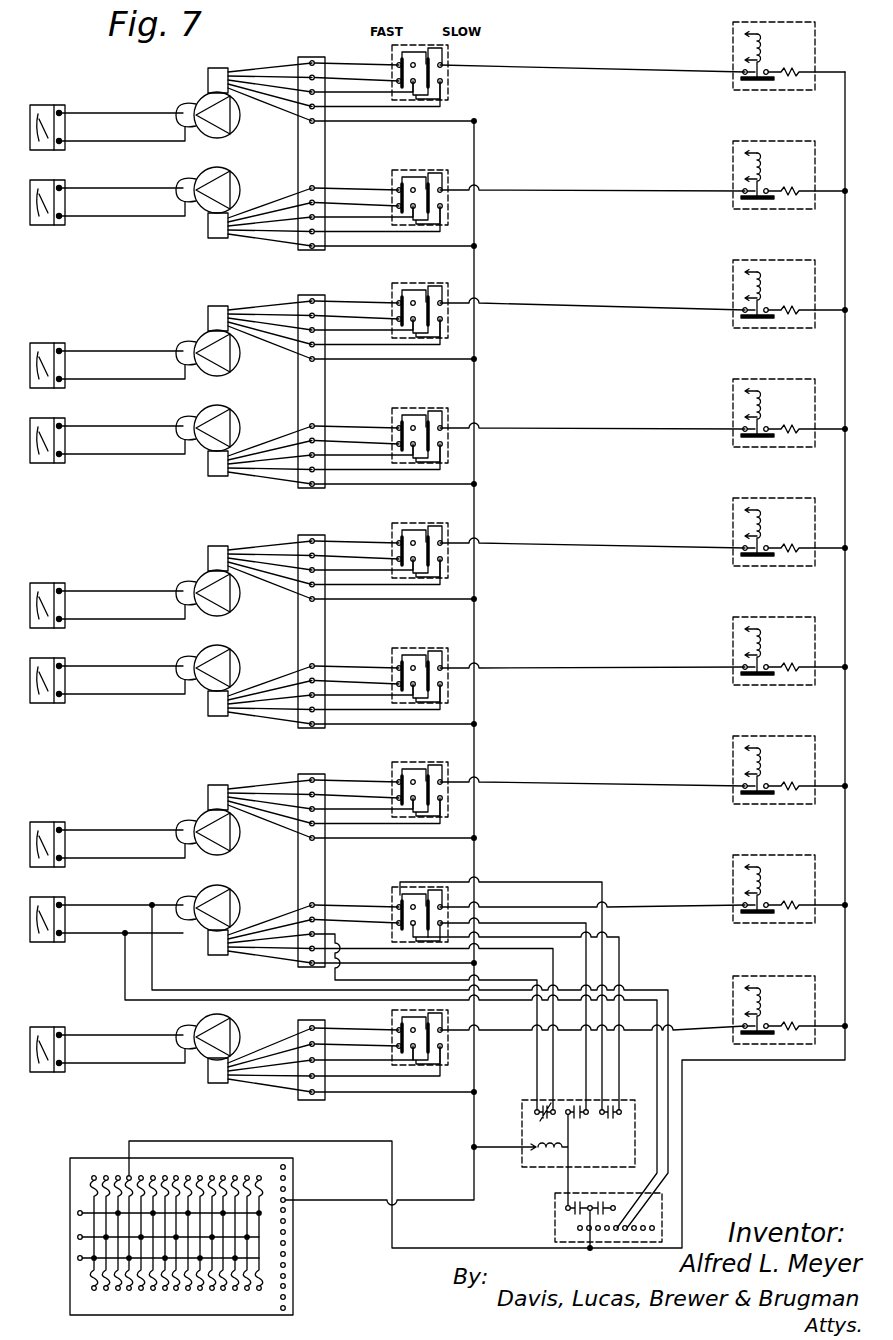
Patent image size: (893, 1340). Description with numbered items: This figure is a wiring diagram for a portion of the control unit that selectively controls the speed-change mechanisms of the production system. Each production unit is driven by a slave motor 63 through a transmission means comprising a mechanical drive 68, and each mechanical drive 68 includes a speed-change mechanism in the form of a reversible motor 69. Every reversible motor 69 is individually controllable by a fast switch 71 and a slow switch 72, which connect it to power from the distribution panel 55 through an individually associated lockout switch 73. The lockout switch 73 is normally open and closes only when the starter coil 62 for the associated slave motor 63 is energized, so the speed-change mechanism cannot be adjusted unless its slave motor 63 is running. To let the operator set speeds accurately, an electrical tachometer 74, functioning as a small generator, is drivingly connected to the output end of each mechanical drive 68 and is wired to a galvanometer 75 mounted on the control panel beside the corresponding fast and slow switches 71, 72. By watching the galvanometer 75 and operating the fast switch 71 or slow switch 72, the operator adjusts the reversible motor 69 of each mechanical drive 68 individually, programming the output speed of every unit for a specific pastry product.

The distribution panel 55 is at (80, 1174).
The starter coil 62 is at (762, 42).
The slave motor 63 is at (237, 177).
The mechanical drive 68 is at (207, 102).
The reversible motor 69 is at (230, 68).
The fast switch 71 is at (398, 65).
The slow switch 72 is at (455, 68).
The lockout switch 73 is at (745, 82).
The electrical tachometer 74 is at (180, 107).
The galvanometer 75 is at (47, 105).